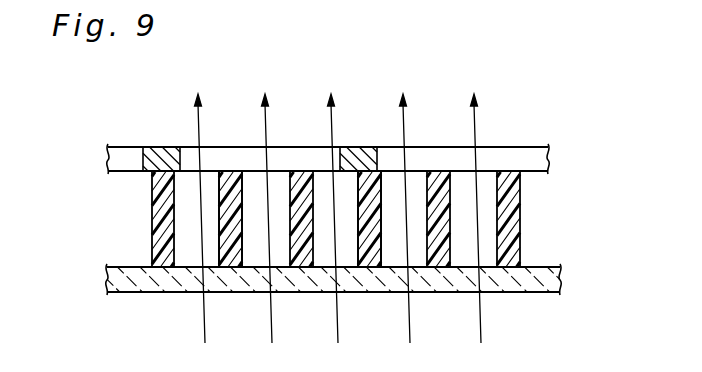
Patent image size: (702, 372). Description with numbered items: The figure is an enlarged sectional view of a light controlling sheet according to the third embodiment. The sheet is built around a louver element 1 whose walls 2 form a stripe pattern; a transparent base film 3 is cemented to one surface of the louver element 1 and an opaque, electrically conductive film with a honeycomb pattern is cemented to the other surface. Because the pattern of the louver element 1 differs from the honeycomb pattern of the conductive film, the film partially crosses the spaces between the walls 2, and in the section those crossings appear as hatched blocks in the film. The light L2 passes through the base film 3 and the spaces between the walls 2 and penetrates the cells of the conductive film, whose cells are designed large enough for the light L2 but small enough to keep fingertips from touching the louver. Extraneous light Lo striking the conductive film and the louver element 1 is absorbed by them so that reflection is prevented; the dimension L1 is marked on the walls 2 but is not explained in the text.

The louver element 1 is at (527, 233).
The wall 2 is at (520, 183).
The transparent base film 3 is at (533, 285).
The extraneous light Lo is at (217, 203).
The pillar width L1 is at (215, 240).
The light L2 is at (336, 233).